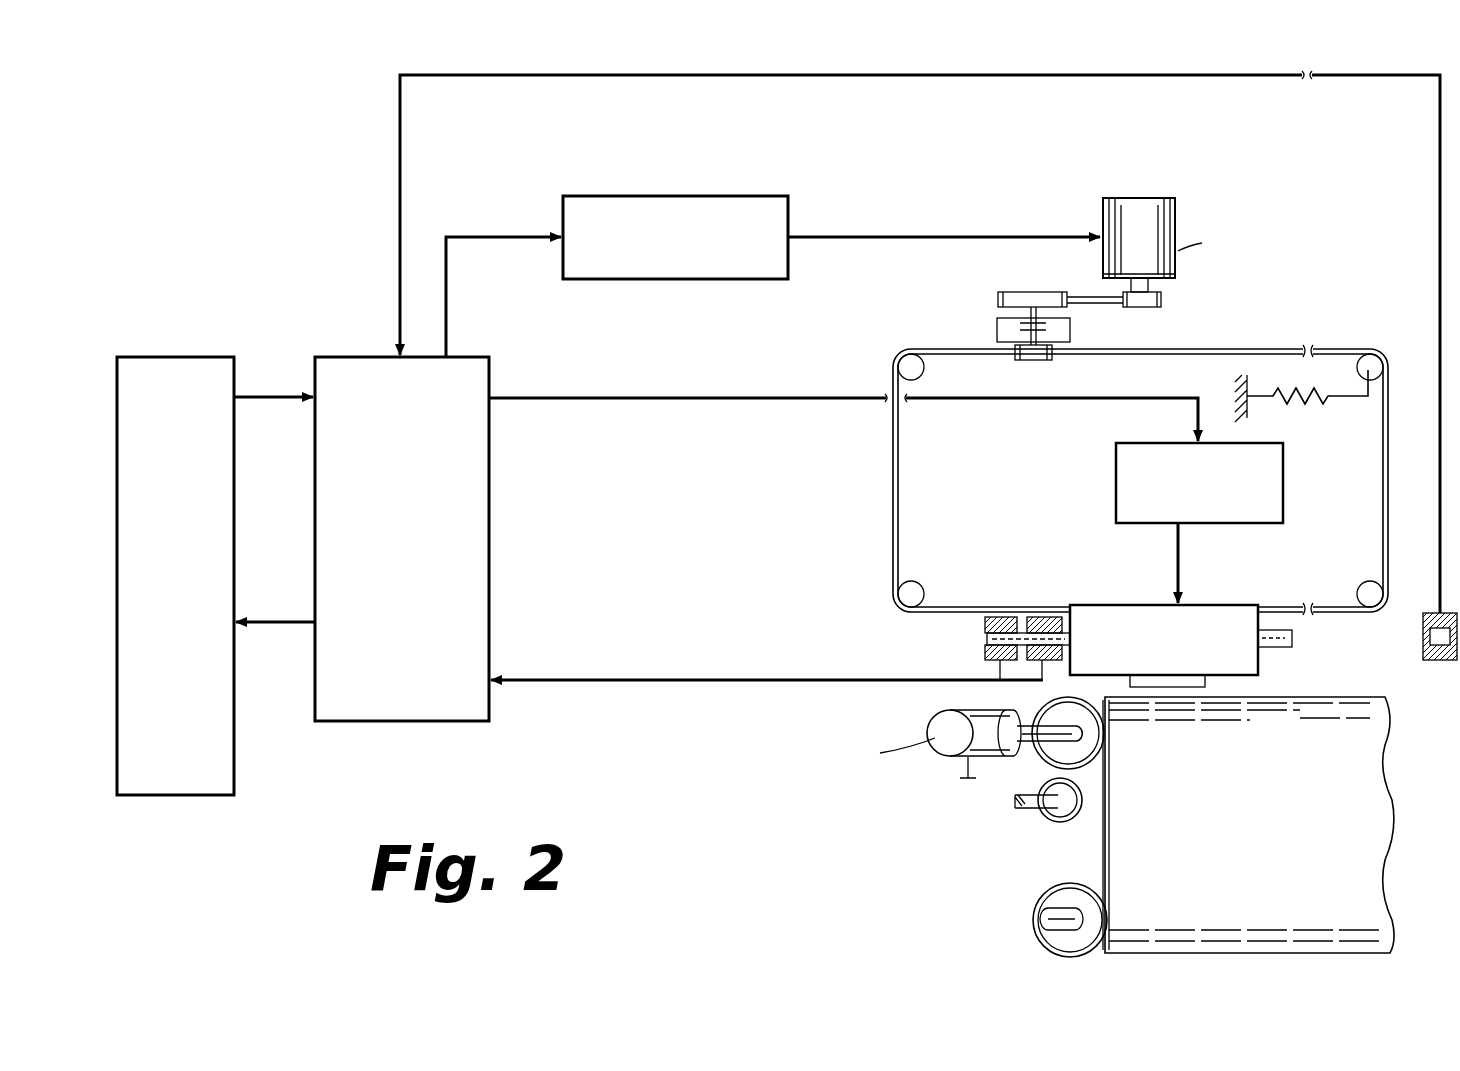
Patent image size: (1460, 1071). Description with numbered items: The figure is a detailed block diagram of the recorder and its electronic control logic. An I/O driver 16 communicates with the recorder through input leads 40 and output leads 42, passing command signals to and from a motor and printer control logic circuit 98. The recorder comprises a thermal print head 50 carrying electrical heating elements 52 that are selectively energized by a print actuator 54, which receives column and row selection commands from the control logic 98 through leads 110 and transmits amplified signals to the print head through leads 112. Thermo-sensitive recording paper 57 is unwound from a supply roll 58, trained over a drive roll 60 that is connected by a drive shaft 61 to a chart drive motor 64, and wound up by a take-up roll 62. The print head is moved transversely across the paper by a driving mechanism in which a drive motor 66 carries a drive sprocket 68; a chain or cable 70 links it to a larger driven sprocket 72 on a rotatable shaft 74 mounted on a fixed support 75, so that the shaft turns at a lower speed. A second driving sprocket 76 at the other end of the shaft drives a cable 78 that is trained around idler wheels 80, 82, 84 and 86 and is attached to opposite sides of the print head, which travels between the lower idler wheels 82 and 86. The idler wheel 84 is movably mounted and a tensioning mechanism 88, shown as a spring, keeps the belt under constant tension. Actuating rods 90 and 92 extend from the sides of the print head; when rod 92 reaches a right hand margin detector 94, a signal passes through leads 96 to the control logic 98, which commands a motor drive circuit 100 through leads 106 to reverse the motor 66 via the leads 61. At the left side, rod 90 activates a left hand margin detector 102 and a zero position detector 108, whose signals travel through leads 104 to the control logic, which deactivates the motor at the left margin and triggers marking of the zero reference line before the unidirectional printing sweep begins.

The I/O driver 16 is at (177, 357).
The input leads 40 is at (272, 622).
The output leads 42 is at (268, 397).
The thermal print head 50 is at (1248, 653).
The electrical heating elements 52 is at (1205, 683).
The print actuator 54 is at (1116, 472).
The thermo-sensitive recording paper 57 is at (1375, 888).
The supply roll 58 is at (1060, 822).
The drive roll 60 is at (1058, 714).
The drive shaft / leads 61 is at (888, 237).
The take-up roll 62 is at (1040, 935).
The chart drive motor 64 is at (945, 728).
The drive motor 66 is at (1160, 205).
The drive sprocket 68 is at (1160, 302).
The drive chain 70 is at (1082, 297).
The driven sprocket 72 is at (1012, 292).
The rotatable shaft 74 is at (1048, 330).
The fixed support 75 is at (1012, 328).
The second driving sprocket 76 is at (1040, 362).
The cable 78 is at (1385, 485).
The idler wheel 80 is at (924, 370).
The idler wheel 82 is at (920, 590).
The movable idler wheel 84 is at (1368, 362).
The idler wheel 86 is at (1362, 590).
The tensioning mechanism 88 is at (1305, 405).
The actuating rod 90 is at (987, 638).
The actuating rod 92 is at (1292, 638).
The right hand margin detector 94 is at (1455, 660).
The leads 96 is at (1440, 212).
The motor and printer control logic circuit 98 is at (465, 390).
The motor drive circuit 100 is at (633, 205).
The left hand margin detector 102 is at (985, 655).
The leads 104 is at (680, 680).
The leads 106 is at (446, 290).
The zero position detector 108 is at (1042, 617).
The leads 110 is at (690, 322).
The leads 112 is at (1180, 552).